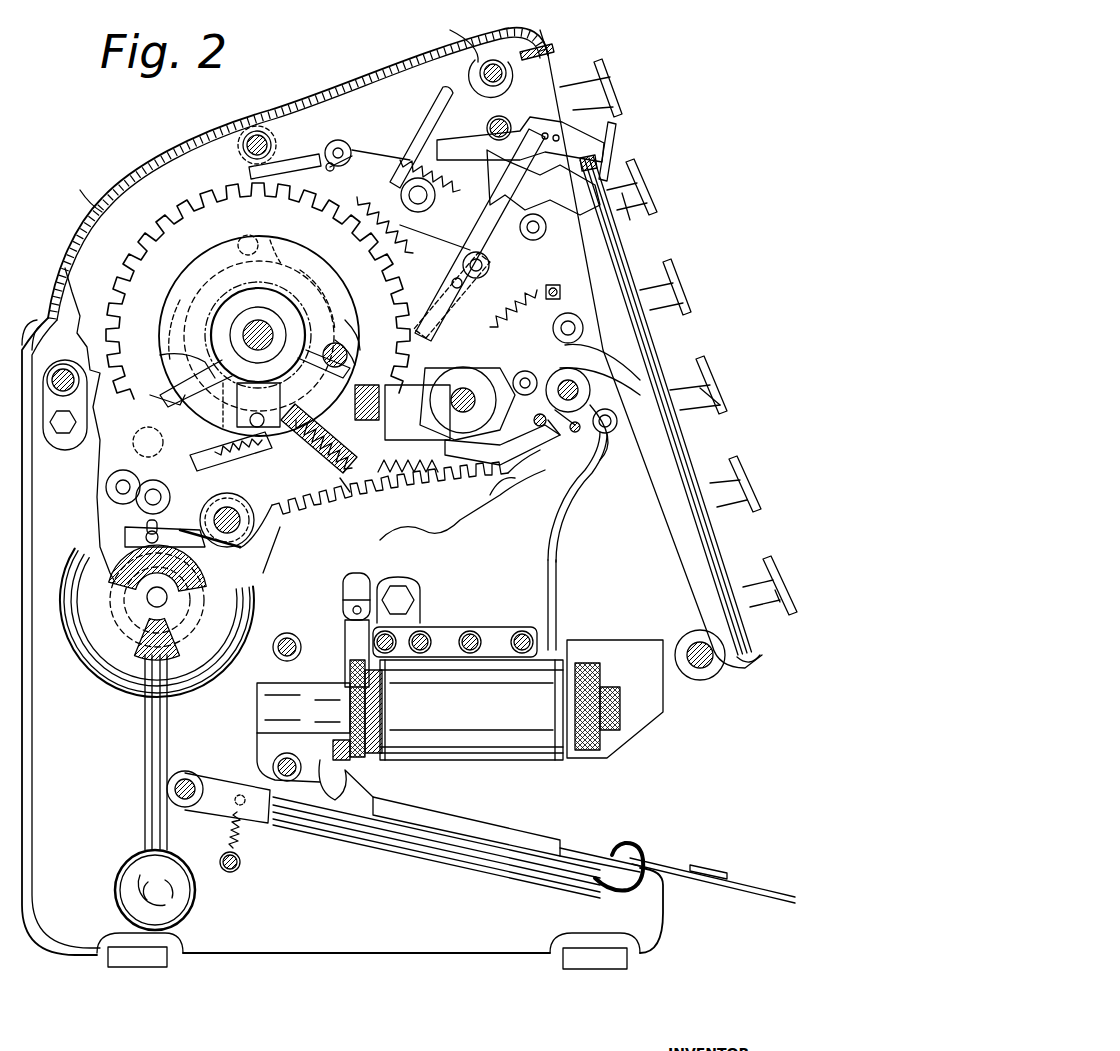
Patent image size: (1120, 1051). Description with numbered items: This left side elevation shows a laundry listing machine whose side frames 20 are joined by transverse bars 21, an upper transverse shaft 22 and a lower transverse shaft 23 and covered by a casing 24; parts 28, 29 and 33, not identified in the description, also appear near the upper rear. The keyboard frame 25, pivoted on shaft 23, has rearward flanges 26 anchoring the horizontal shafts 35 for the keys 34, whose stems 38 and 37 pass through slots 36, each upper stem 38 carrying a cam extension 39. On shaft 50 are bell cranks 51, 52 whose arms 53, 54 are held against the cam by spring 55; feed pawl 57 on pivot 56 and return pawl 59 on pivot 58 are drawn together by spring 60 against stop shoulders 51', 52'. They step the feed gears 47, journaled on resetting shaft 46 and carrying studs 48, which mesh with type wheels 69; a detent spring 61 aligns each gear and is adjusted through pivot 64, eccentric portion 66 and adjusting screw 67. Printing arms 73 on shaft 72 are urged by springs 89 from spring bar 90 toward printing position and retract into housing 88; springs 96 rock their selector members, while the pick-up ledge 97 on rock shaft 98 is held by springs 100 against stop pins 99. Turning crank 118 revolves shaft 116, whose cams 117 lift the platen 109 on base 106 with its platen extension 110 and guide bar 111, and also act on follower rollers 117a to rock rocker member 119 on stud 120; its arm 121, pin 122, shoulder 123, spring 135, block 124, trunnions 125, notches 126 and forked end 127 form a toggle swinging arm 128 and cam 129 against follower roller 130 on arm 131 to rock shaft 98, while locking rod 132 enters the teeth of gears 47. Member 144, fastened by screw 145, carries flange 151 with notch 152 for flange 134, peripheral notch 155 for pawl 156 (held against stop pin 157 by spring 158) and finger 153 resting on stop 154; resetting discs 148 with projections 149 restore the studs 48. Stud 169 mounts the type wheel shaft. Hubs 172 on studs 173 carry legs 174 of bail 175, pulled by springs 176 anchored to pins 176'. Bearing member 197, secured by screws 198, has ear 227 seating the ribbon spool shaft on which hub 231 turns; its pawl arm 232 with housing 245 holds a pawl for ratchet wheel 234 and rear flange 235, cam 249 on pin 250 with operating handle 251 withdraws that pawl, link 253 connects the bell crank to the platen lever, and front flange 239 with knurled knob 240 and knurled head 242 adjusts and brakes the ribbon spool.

The side frames 20 is at (388, 72).
The transverse bars 21 is at (145, 966).
The transverse shaft 22 is at (252, 130).
The transverse shaft 23 is at (705, 681).
The casing 24 is at (100, 202).
The keyboard frame 25 is at (690, 442).
The rearwardly directed flanges 26 is at (650, 346).
The housing 28 is at (455, 32).
The post 29 is at (540, 46).
The screw 33 is at (480, 78).
The operating keys 34 is at (620, 110).
The horizontal shafts 35 is at (506, 118).
The slots 36 is at (550, 70).
The key stems 37 is at (630, 205).
The key stems 38 is at (600, 72).
The cam extension 39 is at (432, 112).
The resetting shaft 46 is at (260, 320).
The feed gears 47 is at (200, 198).
The stud 48 is at (205, 250).
The shaft 50 is at (430, 218).
The bell crank 51 is at (381, 137).
The stop shoulder 51' is at (352, 171).
The bell crank 52 is at (453, 206).
The stop shoulder 52' is at (449, 295).
The arm 53 is at (404, 158).
The arm 54 is at (505, 188).
The spring 55 is at (448, 152).
The pivot 56 is at (340, 140).
The feed pawl 57 is at (282, 160).
The pivot 58 is at (490, 266).
The return pawl 59 is at (463, 284).
The spring 60 is at (364, 230).
The detent spring 61 is at (82, 308).
The pivot 64 is at (63, 440).
The eccentric portion 66 is at (63, 364).
The adjusting screw 67 is at (36, 325).
The type wheels 69 is at (440, 526).
The transverse shaft 72 is at (455, 390).
The printing arms 73 is at (505, 486).
The housing 88 is at (664, 716).
The spring 89 is at (518, 312).
The spring bar 90 is at (553, 284).
The spring 96 is at (448, 336).
The pick-up ledge 97 is at (562, 446).
The rock shaft 98 is at (612, 352).
The stop pins 99 is at (622, 378).
The springs 100 is at (592, 462).
The base 106 is at (592, 853).
The platen 109 is at (540, 834).
The platen extension 110 is at (678, 869).
The bar 111 is at (716, 868).
The shaft 116 is at (120, 575).
The cam 117 is at (72, 625).
The follower rollers 117a is at (145, 538).
The operating crank 118 is at (145, 727).
The rocker member 119 is at (140, 440).
The stud 120 is at (205, 546).
The arm 121 is at (255, 530).
The pin 122 is at (350, 488).
The shoulder 123 is at (262, 514).
The block 124 is at (350, 362).
The trunnions 125 is at (385, 465).
The notches 126 is at (366, 404).
The forked end 127 is at (405, 428).
The arm 128 is at (452, 470).
The cam 129 is at (552, 456).
The follower roller 130 is at (525, 371).
The arm 131 is at (568, 368).
The locking rod 132 is at (130, 472).
The flange 134 is at (165, 398).
The spring 135 is at (325, 514).
The member 144 is at (212, 330).
The screw 145 is at (274, 410).
The resetting discs 148 is at (330, 285).
The projection 149 is at (268, 236).
The flange 151 is at (168, 326).
The notch 152 is at (175, 356).
The finger 153 is at (352, 347).
The stop 154 is at (352, 326).
The peripheral notch 155 is at (310, 432).
The pawl 156 is at (228, 452).
The stop pin 157 is at (172, 493).
The spring 158 is at (205, 462).
The stud 169 is at (405, 584).
The hubs 172 is at (198, 772).
The studs 173 is at (238, 806).
The legs 174 is at (350, 834).
The bail 175 is at (642, 850).
The springs 176 is at (207, 836).
The pins 176' is at (249, 874).
The bearing member 197 is at (257, 690).
The screws 198 is at (288, 632).
The ear 227 is at (257, 710).
The hub 231 is at (336, 748).
The pawl arm 232 is at (350, 670).
The ratchet wheel 234 is at (380, 718).
The rear flange 235 is at (388, 700).
The flange 239 is at (556, 696).
The knob portion 240 is at (590, 666).
The knurled head 242 is at (612, 686).
The housing 245 is at (346, 640).
The cam 249 is at (352, 611).
The pin 250 is at (345, 602).
The operating handle 251 is at (345, 586).
The link 253 is at (350, 781).